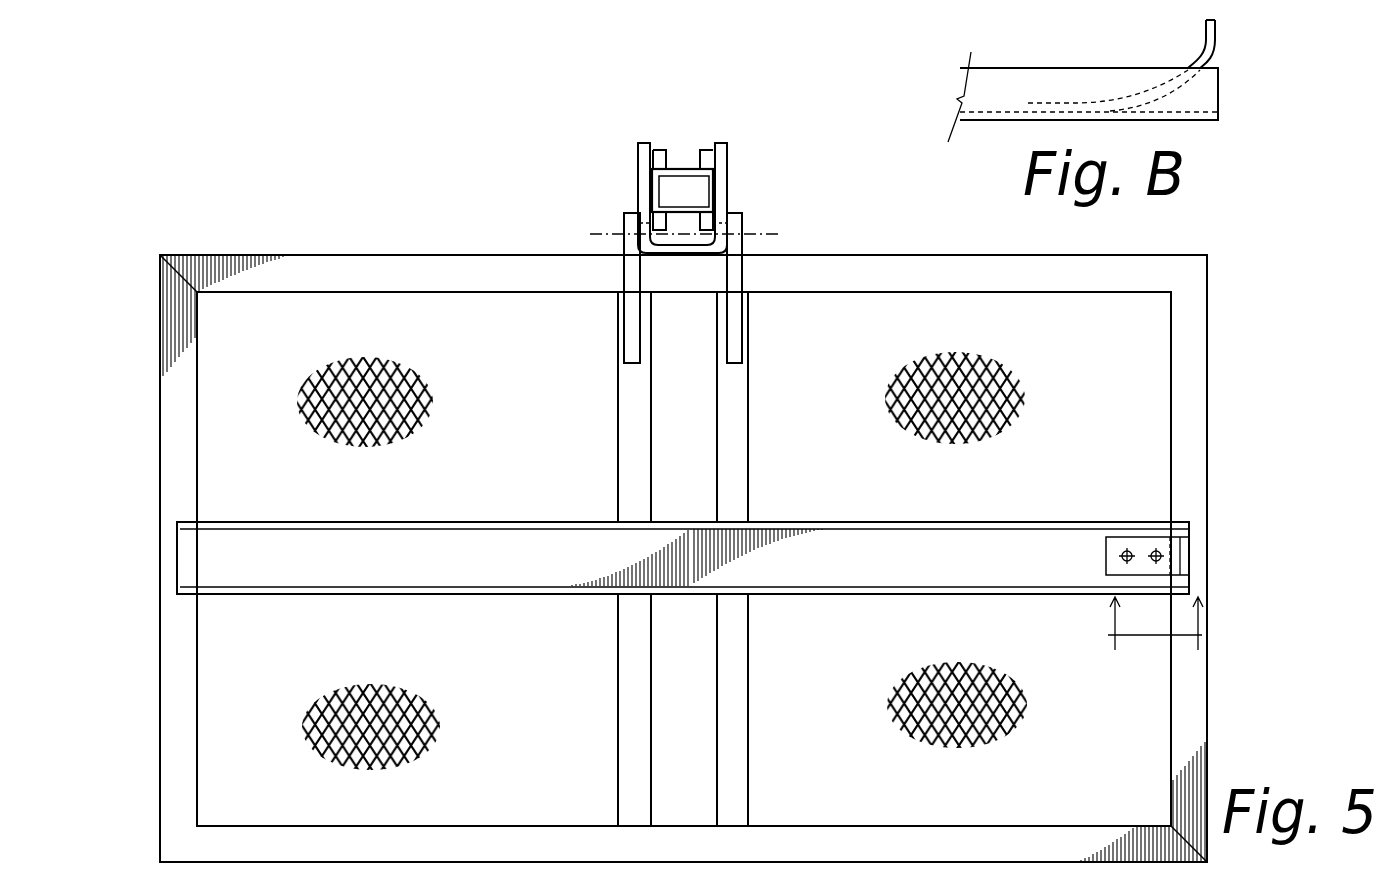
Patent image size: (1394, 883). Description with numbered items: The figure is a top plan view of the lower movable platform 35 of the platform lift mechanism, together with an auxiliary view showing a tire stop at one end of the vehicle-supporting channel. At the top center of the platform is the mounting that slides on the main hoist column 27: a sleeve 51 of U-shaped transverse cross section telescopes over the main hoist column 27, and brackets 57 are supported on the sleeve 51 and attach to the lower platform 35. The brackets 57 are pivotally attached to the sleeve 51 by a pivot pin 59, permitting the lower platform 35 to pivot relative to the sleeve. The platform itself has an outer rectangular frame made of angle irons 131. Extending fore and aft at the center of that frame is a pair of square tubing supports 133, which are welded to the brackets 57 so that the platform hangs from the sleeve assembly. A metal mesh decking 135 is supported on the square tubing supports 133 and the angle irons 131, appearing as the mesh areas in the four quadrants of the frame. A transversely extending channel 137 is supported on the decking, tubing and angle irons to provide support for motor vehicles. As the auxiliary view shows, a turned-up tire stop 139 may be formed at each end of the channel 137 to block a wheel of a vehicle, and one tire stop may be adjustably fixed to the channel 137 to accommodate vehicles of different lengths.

In FIG. 5, the main hoist column 27 is at (685, 168).
In FIG. 5, the lower movable platform 35 is at (1214, 347).
In FIG. 5, the sleeve 51 is at (638, 187).
In FIG. 5, the brackets 57 is at (737, 270).
In FIG. 5, the pivot pin 59 is at (753, 232).
In FIG. 5, the angle irons 131 is at (430, 265).
In FIG. 5, the square tubing supports 133 is at (633, 421).
In FIG. 5, the metal mesh decking 135 is at (242, 703).
In FIG. 5, the channel 137 is at (492, 563).
In FIG. B, the tire stop 139 is at (1213, 32).